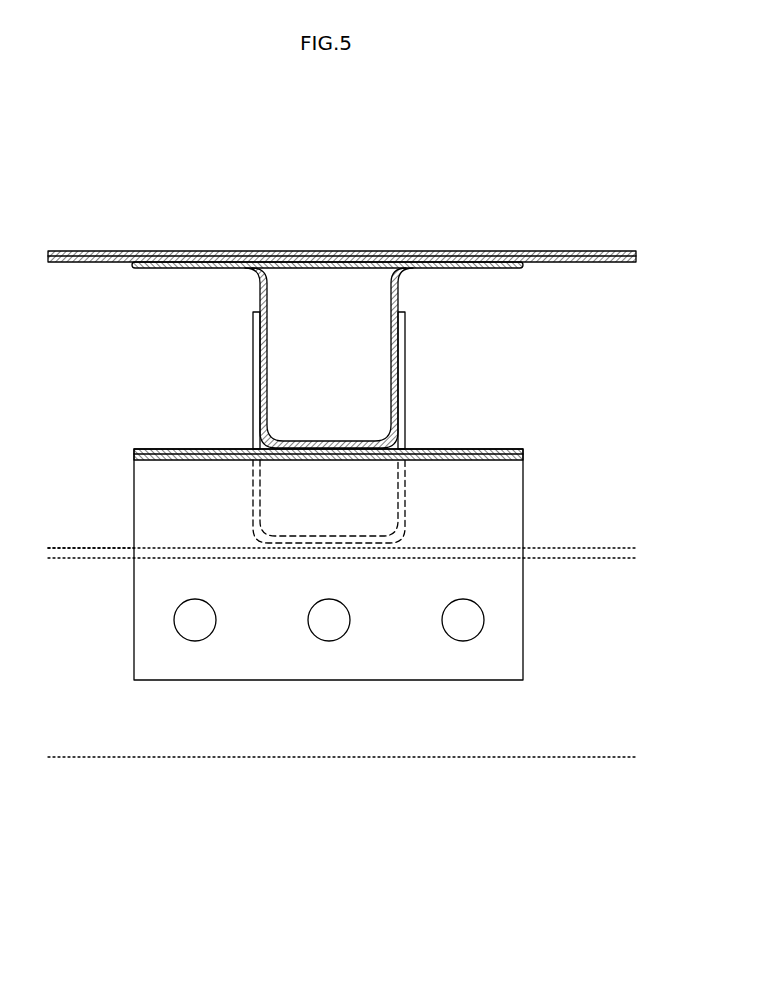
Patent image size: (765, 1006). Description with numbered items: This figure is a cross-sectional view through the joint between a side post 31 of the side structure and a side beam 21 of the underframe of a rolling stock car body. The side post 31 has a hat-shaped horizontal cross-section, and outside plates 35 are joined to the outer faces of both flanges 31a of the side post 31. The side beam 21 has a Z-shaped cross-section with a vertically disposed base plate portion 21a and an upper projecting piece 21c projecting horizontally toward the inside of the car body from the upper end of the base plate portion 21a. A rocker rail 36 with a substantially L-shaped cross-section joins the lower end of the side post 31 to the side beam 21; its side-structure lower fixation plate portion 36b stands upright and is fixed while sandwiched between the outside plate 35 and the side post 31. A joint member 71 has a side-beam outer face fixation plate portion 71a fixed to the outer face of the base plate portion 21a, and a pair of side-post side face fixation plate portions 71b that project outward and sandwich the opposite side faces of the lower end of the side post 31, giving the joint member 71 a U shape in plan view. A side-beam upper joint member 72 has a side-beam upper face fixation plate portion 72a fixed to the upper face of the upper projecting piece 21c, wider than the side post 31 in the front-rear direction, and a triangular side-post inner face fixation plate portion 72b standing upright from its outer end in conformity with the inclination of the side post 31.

The side beam 21 is at (591, 542).
The base plate portion 21a is at (103, 547).
The upper projecting piece 21c is at (143, 746).
The side post 31 is at (327, 355).
The flange 31a is at (178, 268).
The outside plate 35 is at (311, 250).
The rocker rail 36 is at (342, 262).
The side-structure lower fixation plate portion 36b is at (90, 264).
The joint member 71 is at (328, 427).
The side-beam outer face fixation plate portion 71a is at (315, 543).
The side-post side face fixation plate portion 71b is at (252, 348).
The side-beam upper joint member 72 is at (368, 533).
The side-beam upper face fixation plate portion 72a is at (512, 655).
The side-post inner face fixation plate portion 72b is at (455, 449).